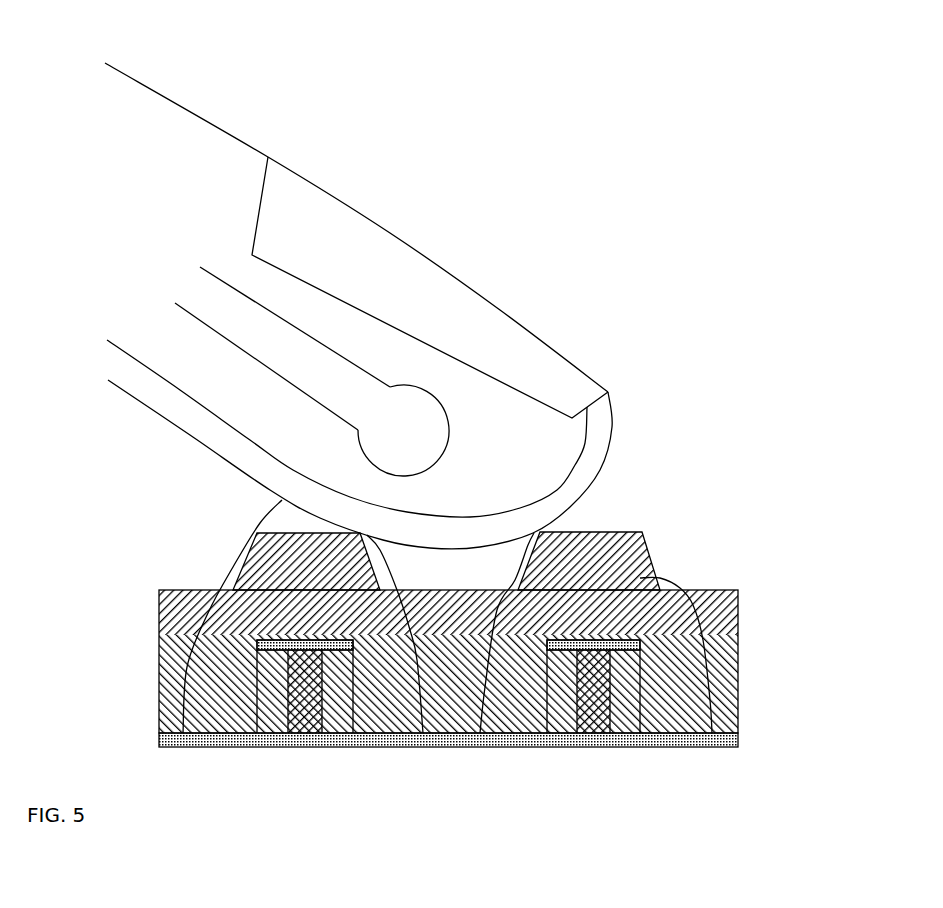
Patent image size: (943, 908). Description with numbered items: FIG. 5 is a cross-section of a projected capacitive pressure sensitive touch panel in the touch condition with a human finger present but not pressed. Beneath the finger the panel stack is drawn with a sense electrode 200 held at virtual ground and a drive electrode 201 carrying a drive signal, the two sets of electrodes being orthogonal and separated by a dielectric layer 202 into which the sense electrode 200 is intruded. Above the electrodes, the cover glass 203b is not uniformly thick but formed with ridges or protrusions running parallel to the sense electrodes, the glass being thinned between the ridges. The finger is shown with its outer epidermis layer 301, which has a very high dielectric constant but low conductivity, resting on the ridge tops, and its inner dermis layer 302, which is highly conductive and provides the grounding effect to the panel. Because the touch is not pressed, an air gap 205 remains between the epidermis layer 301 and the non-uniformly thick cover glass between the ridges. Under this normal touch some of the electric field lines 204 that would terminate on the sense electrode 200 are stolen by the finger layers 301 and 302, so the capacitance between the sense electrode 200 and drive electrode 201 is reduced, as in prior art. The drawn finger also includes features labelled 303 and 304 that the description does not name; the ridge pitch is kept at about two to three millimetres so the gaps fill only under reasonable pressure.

The sense electrode 200 is at (620, 690).
The drive electrode 201 is at (433, 738).
The dielectric layer 202 is at (240, 723).
The cover glass with ridges 203b is at (268, 550).
The electric field lines 204 is at (358, 717).
The air gap 205 is at (445, 578).
The epidermis layer 301 is at (598, 450).
The dermis layer 302 is at (273, 420).
The fingernail 303 is at (412, 287).
The finger bone 304 is at (297, 355).